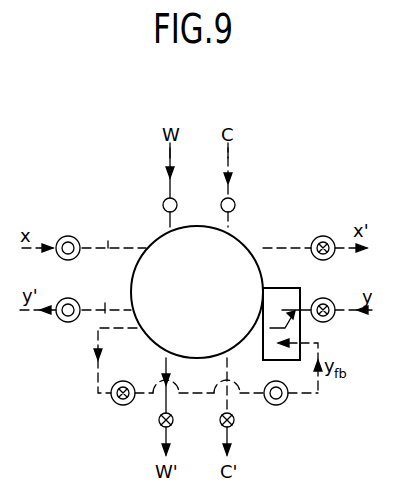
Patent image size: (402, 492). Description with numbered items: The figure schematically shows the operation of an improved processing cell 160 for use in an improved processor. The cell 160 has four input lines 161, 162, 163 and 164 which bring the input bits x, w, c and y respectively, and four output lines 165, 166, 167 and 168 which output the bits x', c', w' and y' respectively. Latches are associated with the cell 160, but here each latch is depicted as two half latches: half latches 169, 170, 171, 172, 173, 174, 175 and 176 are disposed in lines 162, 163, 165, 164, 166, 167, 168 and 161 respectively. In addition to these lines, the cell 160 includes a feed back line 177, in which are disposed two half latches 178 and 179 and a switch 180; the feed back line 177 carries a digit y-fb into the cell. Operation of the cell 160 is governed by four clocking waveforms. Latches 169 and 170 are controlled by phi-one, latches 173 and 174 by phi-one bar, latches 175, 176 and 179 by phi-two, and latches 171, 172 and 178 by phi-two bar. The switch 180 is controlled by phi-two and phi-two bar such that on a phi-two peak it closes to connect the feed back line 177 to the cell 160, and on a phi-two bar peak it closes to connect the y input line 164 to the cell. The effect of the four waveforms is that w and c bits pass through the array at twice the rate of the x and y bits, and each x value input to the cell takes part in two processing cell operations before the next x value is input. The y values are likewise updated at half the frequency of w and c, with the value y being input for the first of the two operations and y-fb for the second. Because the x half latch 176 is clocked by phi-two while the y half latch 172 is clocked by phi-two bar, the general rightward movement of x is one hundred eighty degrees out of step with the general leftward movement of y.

The processing cell 160 is at (310, 178).
The input line 161 is at (110, 246).
The input line 162 is at (168, 153).
The input line 163 is at (230, 153).
The input line 164 is at (333, 320).
The output line 165 is at (274, 246).
The output line 166 is at (230, 437).
The output line 167 is at (166, 437).
The output line 168 is at (105, 302).
The half latch 169 is at (163, 205).
The half latch 170 is at (234, 200).
The half latch 171 is at (322, 236).
The half latch 172 is at (322, 298).
The half latch 173 is at (234, 420).
The half latch 174 is at (158, 422).
The half latch 175 is at (58, 319).
The half latch 176 is at (67, 236).
The feed back line 177 is at (96, 372).
The half latch 178 is at (112, 401).
The half latch 179 is at (284, 402).
The switch 180 is at (277, 288).